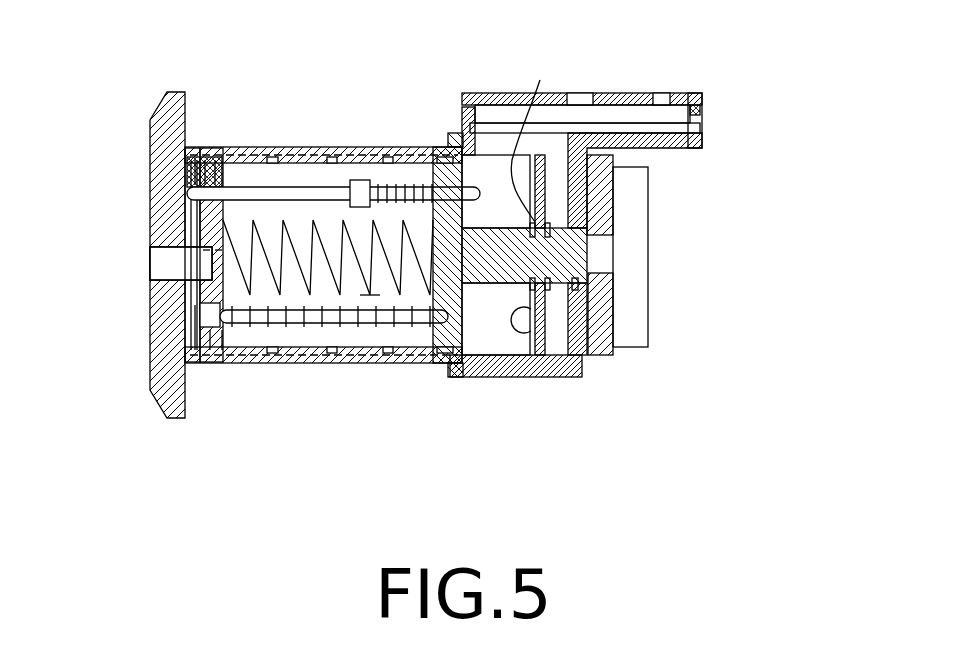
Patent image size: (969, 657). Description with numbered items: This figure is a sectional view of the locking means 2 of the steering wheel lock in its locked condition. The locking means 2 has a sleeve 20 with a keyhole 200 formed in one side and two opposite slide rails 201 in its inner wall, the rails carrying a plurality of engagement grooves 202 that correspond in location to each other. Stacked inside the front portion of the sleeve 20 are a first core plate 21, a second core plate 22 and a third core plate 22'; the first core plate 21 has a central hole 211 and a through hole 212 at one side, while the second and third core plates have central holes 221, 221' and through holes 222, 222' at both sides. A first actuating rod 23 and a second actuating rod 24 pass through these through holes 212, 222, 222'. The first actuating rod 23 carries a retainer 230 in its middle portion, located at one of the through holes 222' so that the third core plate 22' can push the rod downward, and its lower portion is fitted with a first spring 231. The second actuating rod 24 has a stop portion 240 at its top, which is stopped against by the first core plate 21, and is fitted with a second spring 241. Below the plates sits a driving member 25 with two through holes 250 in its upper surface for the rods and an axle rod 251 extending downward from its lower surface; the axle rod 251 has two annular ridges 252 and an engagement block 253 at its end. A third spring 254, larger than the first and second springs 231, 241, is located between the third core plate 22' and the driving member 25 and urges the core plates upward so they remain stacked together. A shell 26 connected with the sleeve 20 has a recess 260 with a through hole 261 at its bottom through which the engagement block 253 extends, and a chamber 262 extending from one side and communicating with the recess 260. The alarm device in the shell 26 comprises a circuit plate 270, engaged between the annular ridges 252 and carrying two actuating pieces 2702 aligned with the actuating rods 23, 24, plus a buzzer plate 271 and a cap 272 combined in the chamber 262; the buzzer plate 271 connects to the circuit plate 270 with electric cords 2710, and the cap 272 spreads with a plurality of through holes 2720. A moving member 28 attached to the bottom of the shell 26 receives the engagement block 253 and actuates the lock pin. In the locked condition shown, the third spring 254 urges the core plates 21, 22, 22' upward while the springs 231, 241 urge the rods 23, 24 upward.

The locking means 2 is at (663, 347).
The sleeve 20 is at (345, 147).
The first core plate 21 is at (197, 365).
The second core plate 22 is at (218, 326).
The third core plate 22' is at (328, 358).
The first actuating rod 23 is at (342, 188).
The second actuating rod 24 is at (435, 360).
The driving member 25 is at (465, 315).
The shell 26 is at (703, 147).
The moving member 28 is at (627, 245).
The keyhole 200 is at (160, 263).
The slide rails 201 is at (360, 172).
The engagement grooves 202 is at (272, 152).
The central hole 211 is at (195, 283).
The through hole 212 is at (188, 152).
The central hole 221 is at (142, 244).
The central hole 221' is at (152, 225).
The through holes 222 is at (242, 261).
The through holes 222' is at (288, 272).
The retainer 230 is at (375, 182).
The first spring 231 is at (423, 183).
The stop portion 240 is at (210, 317).
The second spring 241 is at (408, 325).
The through holes 250 is at (492, 273).
The axle rod 251 is at (523, 307).
The annular ridges 252 is at (573, 375).
The engagement block 253 is at (600, 270).
The third spring 254 is at (370, 297).
The recess 260 is at (488, 152).
The through hole 261 is at (595, 205).
The chamber 262 is at (657, 132).
The circuit plate 270 is at (577, 92).
The buzzer plate 271 is at (700, 118).
The cap 272 is at (622, 97).
The actuating pieces 2702 is at (585, 137).
The electric cords 2710 is at (575, 150).
The through holes 2720 is at (660, 98).